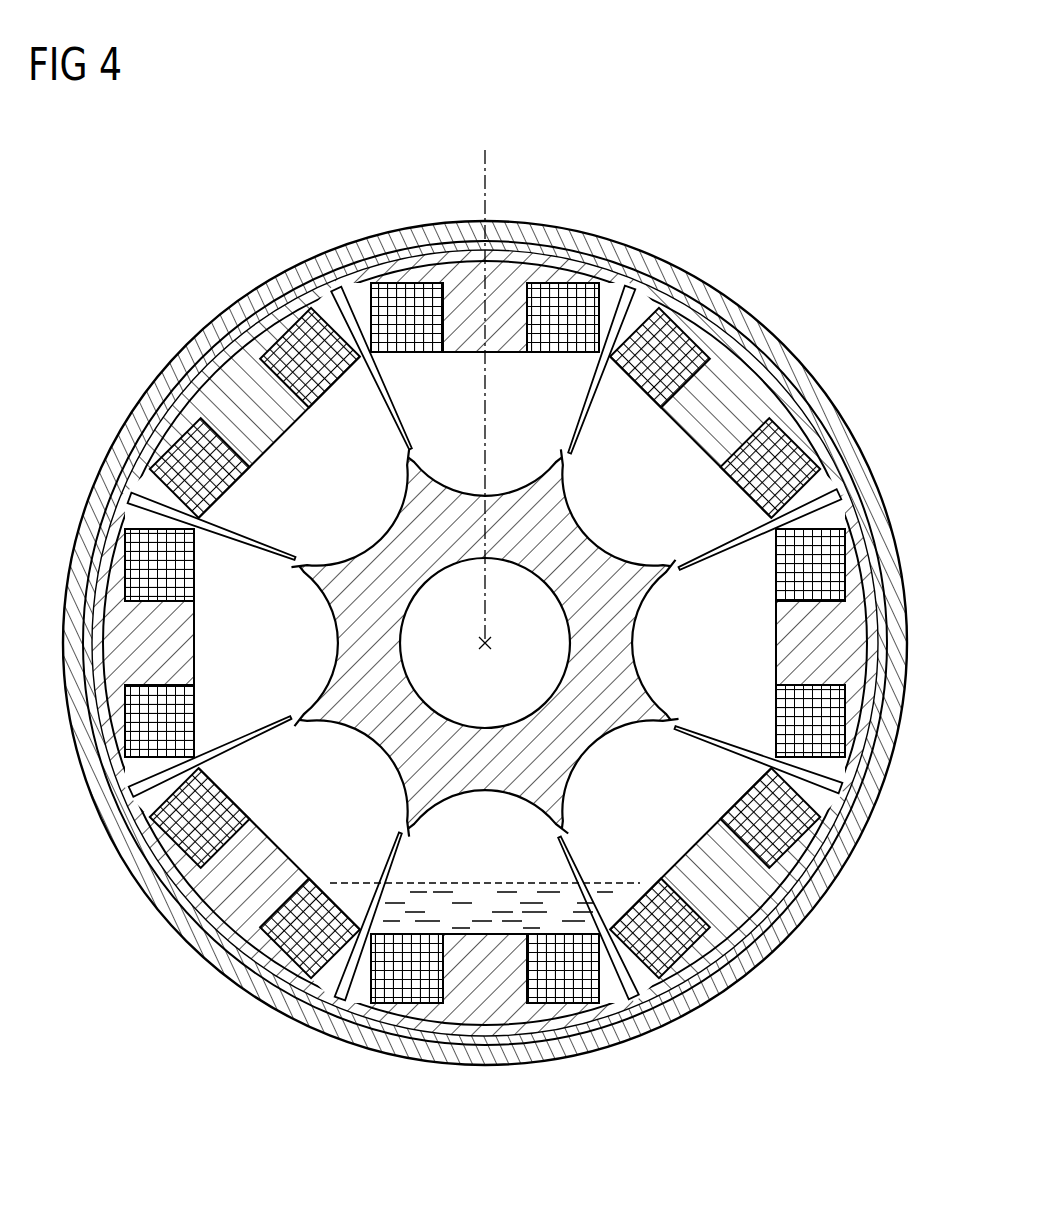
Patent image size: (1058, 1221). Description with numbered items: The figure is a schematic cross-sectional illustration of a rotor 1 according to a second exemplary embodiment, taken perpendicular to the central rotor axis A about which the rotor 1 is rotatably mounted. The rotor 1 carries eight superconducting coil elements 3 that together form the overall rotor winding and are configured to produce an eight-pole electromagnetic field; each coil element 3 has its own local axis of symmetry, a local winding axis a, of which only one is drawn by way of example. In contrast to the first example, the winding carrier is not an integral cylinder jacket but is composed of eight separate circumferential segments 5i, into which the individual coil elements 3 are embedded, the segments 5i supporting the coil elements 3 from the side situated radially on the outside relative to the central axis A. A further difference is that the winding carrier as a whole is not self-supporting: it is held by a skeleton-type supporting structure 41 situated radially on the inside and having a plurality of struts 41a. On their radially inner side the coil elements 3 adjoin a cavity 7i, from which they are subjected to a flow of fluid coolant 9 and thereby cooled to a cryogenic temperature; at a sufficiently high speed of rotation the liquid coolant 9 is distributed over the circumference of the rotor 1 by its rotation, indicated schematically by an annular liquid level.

The rotor 1 is at (180, 207).
The local winding axis a is at (499, 160).
The central rotor axis A is at (492, 650).
The superconducting coil element 3 is at (793, 470).
The circumferential segment 5i is at (738, 388).
The cavity 7i is at (660, 508).
The fluid coolant 9 is at (490, 905).
The skeleton-type supporting structure 41 is at (572, 752).
The strut 41a is at (247, 548).